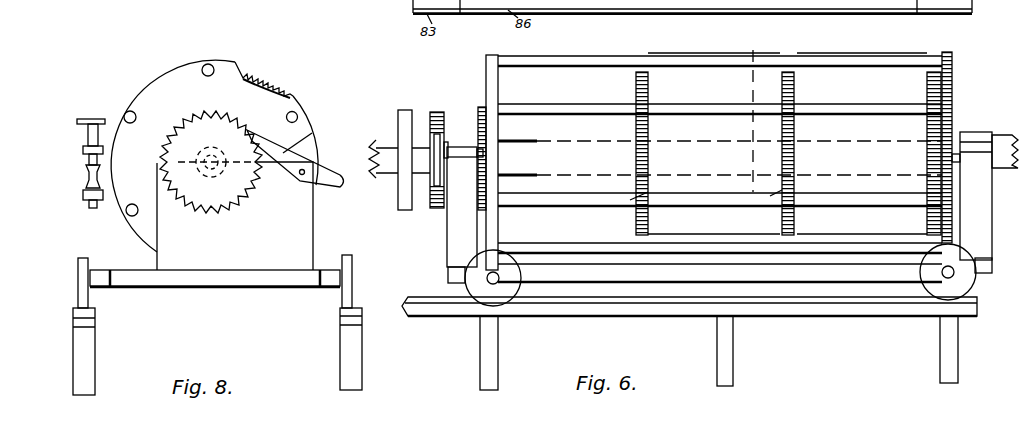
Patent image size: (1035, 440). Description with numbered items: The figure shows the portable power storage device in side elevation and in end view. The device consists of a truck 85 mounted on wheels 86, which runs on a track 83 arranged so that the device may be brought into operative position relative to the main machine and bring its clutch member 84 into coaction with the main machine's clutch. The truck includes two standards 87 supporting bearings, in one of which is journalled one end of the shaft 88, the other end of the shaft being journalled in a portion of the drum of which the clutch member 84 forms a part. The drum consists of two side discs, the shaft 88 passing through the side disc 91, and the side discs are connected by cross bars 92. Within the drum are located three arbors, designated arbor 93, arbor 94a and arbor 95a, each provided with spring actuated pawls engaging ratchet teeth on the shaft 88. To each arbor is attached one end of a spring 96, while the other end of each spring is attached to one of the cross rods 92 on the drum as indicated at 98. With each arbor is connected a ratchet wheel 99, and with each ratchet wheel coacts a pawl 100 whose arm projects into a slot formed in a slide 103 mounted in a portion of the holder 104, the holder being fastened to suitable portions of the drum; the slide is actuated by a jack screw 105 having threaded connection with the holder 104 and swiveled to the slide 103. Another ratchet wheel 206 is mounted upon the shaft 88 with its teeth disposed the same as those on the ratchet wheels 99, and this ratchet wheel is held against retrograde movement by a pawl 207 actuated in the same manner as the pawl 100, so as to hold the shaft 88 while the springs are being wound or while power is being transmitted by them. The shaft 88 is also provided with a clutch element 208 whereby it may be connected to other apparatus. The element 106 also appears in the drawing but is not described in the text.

In FIG. 8, the track 83 is at (95, 318).
In FIG. 6, the track 83 is at (689, 343).
In FIG. 6, the clutch member 84 is at (1002, 135).
In FIG. 6, the truck 85 is at (448, 270).
In FIG. 8, the wheels 86 is at (78, 288).
In FIG. 6, the wheels 86 is at (522, 288).
In FIG. 8, the standards 87 is at (314, 232).
In FIG. 6, the standards 87 is at (447, 233).
In FIG. 6, the shaft 88 is at (410, 158).
In FIG. 8, the side disc 91 is at (173, 64).
In FIG. 6, the side disc 91 is at (955, 57).
In FIG. 8, the cross bars 92 is at (214, 66).
In FIG. 6, the cross bars 92 is at (486, 61).
In FIG. 6, the arbor 93 is at (545, 145).
In FIG. 6, the arbor 94a is at (632, 198).
In FIG. 6, the arbor 95a is at (772, 194).
In FIG. 6, the spring 96 is at (700, 70).
In FIG. 8, the spring attachment point 98 is at (230, 174).
In FIG. 6, the ratchet wheel 99 is at (648, 120).
In FIG. 8, the pawl 100 is at (88, 191).
In FIG. 8, the slide 103 is at (88, 183).
In FIG. 8, the holder 104 is at (106, 118).
In FIG. 8, the jack screw 105 is at (77, 122).
In FIG. 8, the rack teeth 106 is at (258, 76).
In FIG. 6, the rack teeth 106 is at (955, 78).
In FIG. 8, the ratchet wheel 206 is at (230, 128).
In FIG. 6, the ratchet wheel 206 is at (436, 112).
In FIG. 8, the pawl 207 is at (313, 134).
In FIG. 6, the pawl 207 is at (447, 142).
In FIG. 6, the clutch element 208 is at (373, 140).